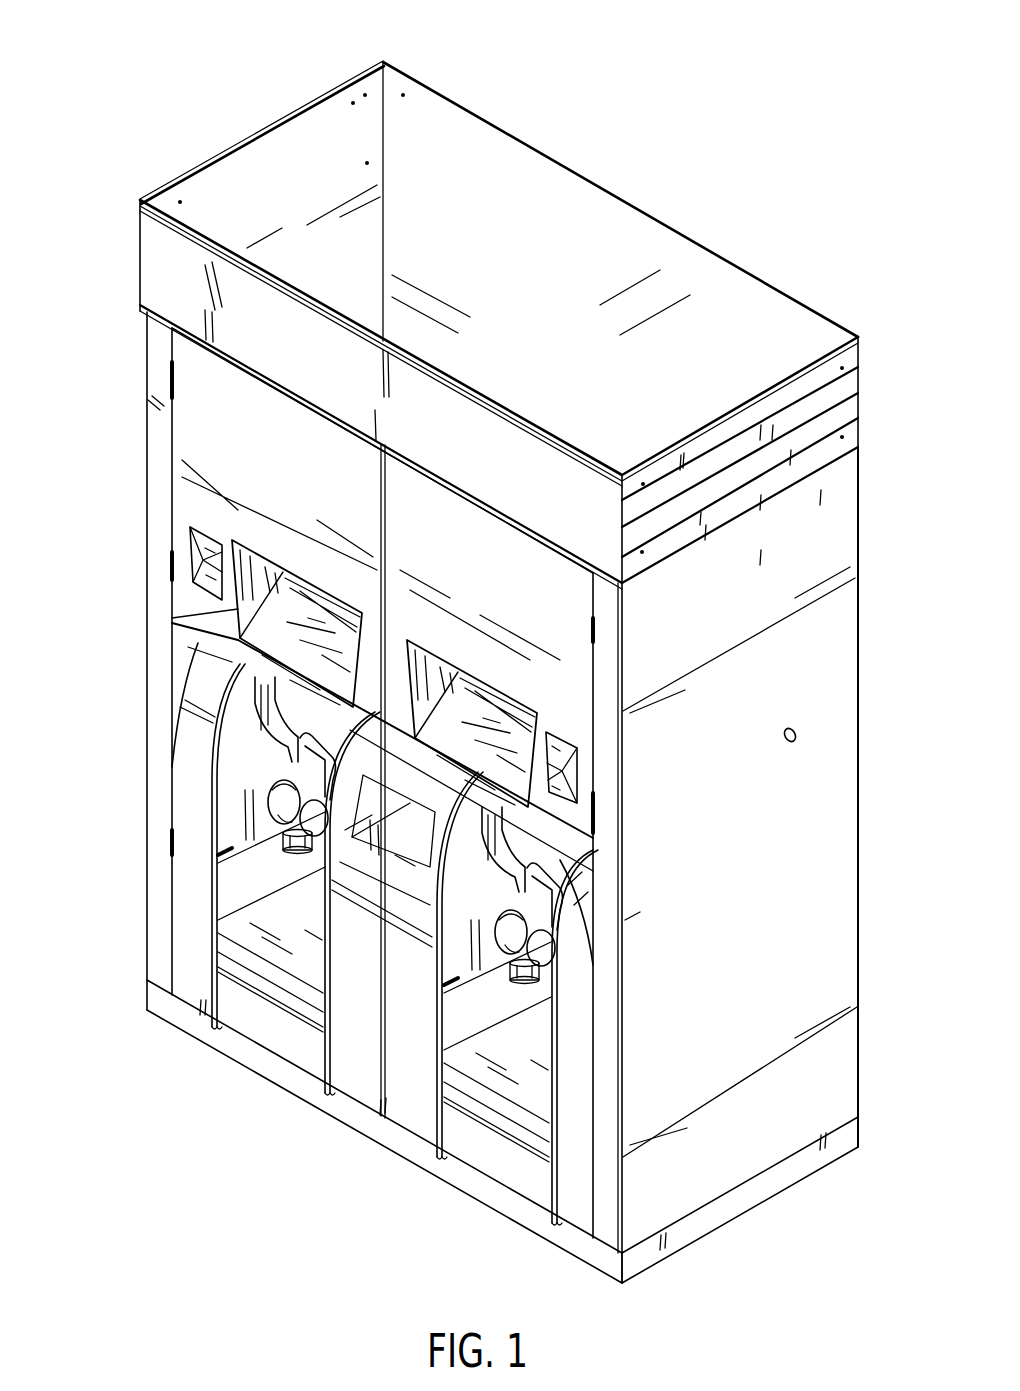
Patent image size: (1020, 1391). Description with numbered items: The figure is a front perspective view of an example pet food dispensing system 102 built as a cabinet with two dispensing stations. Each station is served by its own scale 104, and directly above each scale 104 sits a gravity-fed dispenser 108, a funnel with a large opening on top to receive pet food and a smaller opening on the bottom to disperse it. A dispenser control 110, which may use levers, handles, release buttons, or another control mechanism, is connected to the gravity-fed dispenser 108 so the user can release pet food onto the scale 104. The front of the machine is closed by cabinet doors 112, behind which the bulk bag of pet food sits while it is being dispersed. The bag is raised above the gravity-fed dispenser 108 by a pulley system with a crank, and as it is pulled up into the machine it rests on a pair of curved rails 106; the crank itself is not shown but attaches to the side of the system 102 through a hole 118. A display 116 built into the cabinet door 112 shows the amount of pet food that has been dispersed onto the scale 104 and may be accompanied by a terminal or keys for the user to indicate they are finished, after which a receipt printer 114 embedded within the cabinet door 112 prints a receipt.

The system 102 is at (108, 68).
The scale 104 is at (253, 932).
The curved rails 106 is at (212, 1012).
The gravity-fed dispenser 108 is at (290, 768).
The dispenser control 110 is at (258, 803).
The cabinet doors 112 is at (208, 420).
The receipt printer 114 is at (183, 560).
The display 116 is at (236, 607).
The hole 118 is at (800, 735).